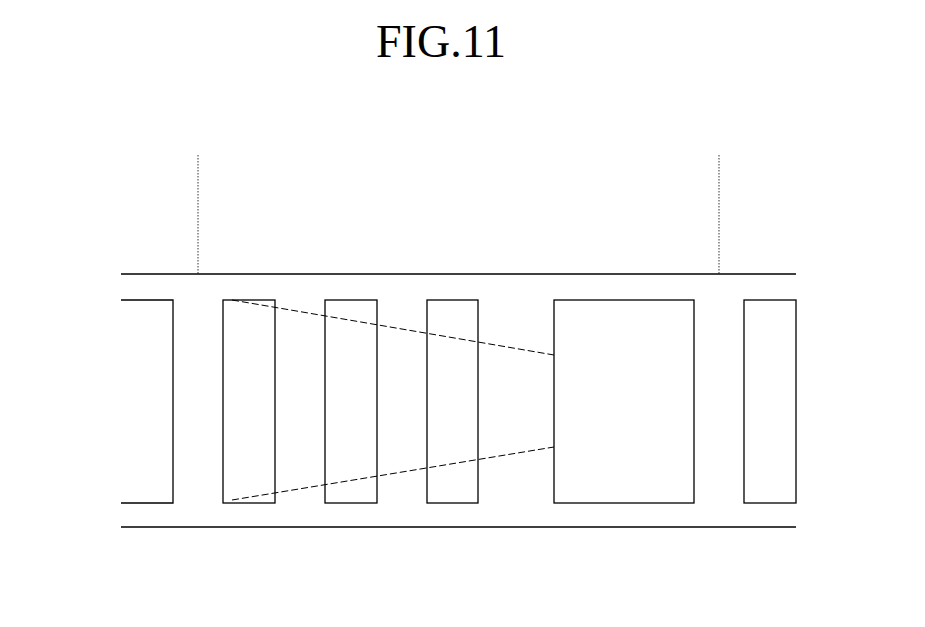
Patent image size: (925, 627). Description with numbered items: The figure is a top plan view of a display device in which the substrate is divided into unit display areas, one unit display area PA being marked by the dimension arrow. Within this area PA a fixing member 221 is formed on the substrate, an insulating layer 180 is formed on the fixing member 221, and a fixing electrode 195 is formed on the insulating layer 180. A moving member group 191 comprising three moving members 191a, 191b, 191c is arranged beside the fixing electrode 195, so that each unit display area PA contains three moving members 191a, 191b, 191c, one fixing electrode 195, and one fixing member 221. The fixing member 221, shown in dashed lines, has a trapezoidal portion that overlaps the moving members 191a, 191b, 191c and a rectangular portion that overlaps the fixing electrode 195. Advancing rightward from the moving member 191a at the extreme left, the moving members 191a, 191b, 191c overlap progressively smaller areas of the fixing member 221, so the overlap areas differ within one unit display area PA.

The insulating layer 180 is at (152, 512).
The moving member group 191 is at (357, 391).
The moving member 191a is at (247, 299).
The moving member 191b is at (350, 299).
The moving member 191c is at (459, 367).
The fixing electrode 195 is at (614, 505).
The fixing member 221 is at (505, 456).
The unit display area PA is at (718, 169).